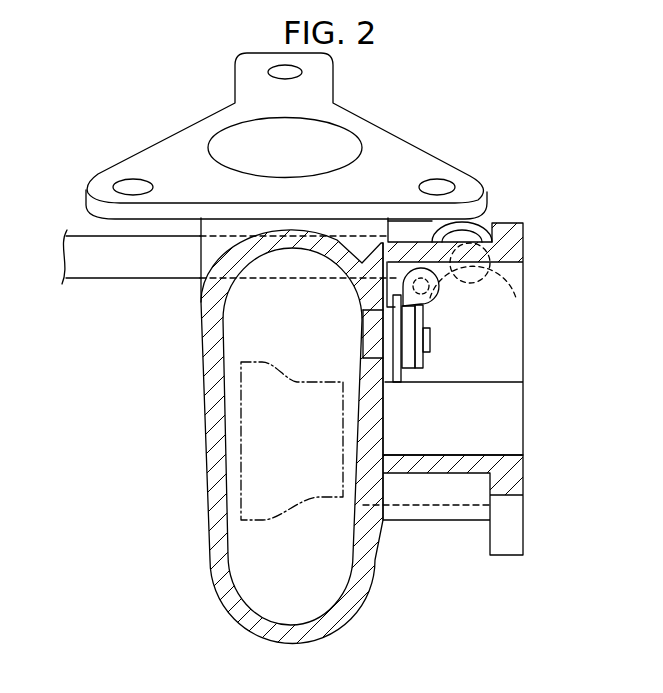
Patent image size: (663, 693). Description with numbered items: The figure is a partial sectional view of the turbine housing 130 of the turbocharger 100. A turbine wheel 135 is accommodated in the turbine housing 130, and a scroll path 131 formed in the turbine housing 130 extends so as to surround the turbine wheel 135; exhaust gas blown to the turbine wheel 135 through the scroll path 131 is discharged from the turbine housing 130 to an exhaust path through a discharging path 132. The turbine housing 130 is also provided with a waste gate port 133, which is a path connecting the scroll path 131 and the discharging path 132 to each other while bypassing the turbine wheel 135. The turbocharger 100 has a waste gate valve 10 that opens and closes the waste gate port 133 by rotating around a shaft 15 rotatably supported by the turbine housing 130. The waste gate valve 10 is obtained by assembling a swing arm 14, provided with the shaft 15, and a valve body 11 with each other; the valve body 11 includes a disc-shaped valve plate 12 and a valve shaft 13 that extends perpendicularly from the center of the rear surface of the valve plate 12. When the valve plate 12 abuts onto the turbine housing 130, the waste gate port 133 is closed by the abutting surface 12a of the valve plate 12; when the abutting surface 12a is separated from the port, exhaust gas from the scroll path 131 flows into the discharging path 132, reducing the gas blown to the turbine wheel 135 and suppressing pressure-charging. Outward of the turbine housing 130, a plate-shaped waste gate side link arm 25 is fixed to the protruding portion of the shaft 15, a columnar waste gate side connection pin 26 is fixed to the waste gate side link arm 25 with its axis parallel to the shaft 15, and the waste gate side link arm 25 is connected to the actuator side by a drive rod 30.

The turbocharger 100 is at (548, 182).
The scroll path 131 is at (356, 136).
The drive rod 30 is at (122, 282).
The turbine housing 130 is at (211, 582).
The waste gate port 133 is at (398, 330).
The turbine wheel 135 is at (306, 505).
The valve body 11 is at (480, 388).
The discharging path 132 is at (504, 455).
The waste gate valve 10 is at (397, 355).
The valve plate 12 is at (416, 384).
The abutting surface 12a is at (376, 345).
The valve shaft 13 is at (430, 352).
The swing arm 14 is at (390, 306).
The shaft 15 is at (445, 297).
The waste gate side connection pin 26 is at (491, 270).
The waste gate side link arm 25 is at (520, 297).